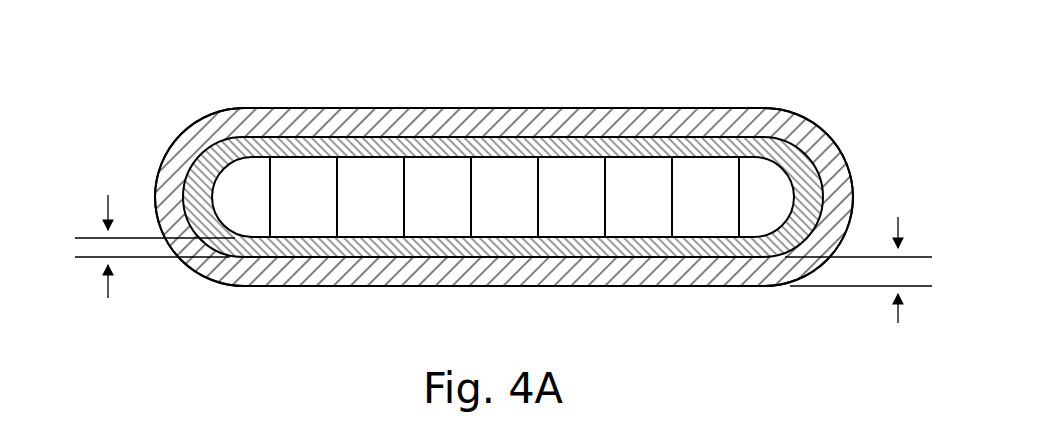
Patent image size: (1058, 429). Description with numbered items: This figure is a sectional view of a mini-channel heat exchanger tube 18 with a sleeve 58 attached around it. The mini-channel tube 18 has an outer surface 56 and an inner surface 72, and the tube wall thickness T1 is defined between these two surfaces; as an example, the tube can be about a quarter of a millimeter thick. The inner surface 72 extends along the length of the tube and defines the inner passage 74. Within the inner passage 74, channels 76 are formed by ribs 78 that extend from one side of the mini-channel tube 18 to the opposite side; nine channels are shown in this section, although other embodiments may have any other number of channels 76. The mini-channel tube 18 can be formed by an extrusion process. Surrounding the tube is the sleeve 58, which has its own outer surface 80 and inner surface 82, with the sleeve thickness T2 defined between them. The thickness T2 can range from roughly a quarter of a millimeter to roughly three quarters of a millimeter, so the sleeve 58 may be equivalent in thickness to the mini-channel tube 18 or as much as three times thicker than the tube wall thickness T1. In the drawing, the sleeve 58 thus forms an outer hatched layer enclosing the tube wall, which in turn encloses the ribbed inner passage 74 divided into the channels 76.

The mini-channel tube 18 is at (800, 139).
The outer surface 56 is at (650, 136).
The sleeve 58 is at (750, 100).
The inner surface 72 is at (630, 157).
The inner passage 74 is at (293, 166).
The channels 76 is at (503, 197).
The ribs 78 is at (268, 176).
The outer surface 80 is at (258, 287).
The inner surface 82 is at (308, 258).
The thickness T1 is at (106, 213).
The thickness T2 is at (900, 235).